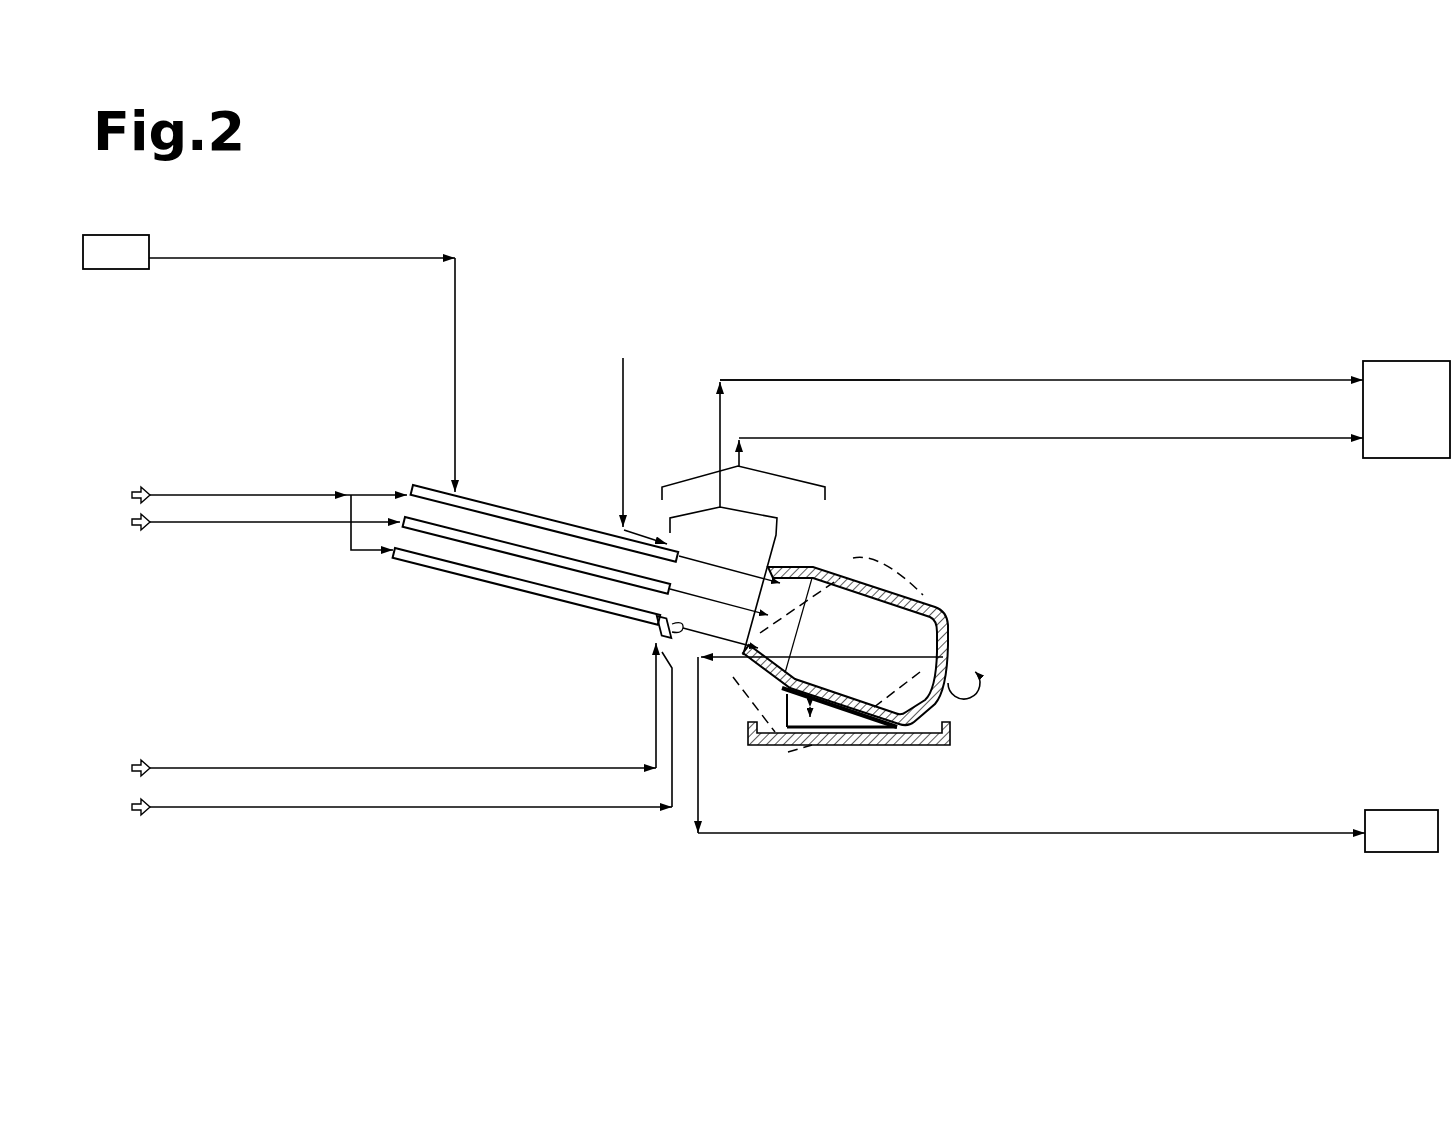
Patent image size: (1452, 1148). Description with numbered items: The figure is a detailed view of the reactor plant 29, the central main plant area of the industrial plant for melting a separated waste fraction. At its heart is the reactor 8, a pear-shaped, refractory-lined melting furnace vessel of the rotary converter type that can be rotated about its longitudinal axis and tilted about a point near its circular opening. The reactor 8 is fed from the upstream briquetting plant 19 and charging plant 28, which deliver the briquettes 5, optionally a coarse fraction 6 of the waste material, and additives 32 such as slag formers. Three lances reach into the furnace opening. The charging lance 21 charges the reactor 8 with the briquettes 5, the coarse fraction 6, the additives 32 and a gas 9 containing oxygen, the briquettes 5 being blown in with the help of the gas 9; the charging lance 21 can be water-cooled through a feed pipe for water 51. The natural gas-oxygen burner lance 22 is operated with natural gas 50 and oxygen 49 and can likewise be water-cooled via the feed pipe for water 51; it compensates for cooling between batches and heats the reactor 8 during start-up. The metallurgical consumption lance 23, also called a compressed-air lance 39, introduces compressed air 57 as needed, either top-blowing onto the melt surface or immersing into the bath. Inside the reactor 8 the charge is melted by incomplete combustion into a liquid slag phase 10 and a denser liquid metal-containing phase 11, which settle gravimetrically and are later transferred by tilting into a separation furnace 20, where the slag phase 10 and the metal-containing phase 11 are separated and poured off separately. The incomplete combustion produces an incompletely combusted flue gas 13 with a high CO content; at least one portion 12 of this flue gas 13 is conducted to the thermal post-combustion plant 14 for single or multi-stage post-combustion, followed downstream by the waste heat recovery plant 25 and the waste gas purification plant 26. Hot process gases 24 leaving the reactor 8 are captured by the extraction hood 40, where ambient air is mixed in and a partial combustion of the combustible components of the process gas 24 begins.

The briquettes 5 is at (130, 301).
The coarse fraction 6 is at (130, 301).
The additives 32 is at (178, 258).
The briquetting plant 19 is at (302, 341).
The charging plant 28 is at (165, 240).
The feed pipe for water 51 is at (218, 495).
The compressed air 57 is at (207, 522).
The natural gas 50 is at (248, 768).
The oxygen 49 is at (248, 808).
The charging lance 21 is at (606, 553).
The metallurgical consumption lance 23 is at (585, 619).
The compressed-air lance 39 is at (562, 578).
The natural gas-oxygen burner lance 22 is at (498, 607).
The gas containing oxygen 9 is at (625, 375).
The extraction hood 40 is at (775, 512).
The portion of incompletely combusted flue gas 12 is at (1041, 381).
The incompletely combusted flue gas 13 is at (1183, 378).
The process gas 24 is at (1235, 438).
The reactor plant 29 is at (910, 348).
The thermal post-combustion plant 14 is at (1406, 326).
The waste heat recovery plant 25 is at (1406, 326).
The waste gas purification plant 26 is at (1388, 342).
The reactor 8 is at (977, 598).
The slag phase 10 is at (1031, 745).
The metal-containing phase 11 is at (1143, 833).
The separation furnace 20 is at (1388, 797).